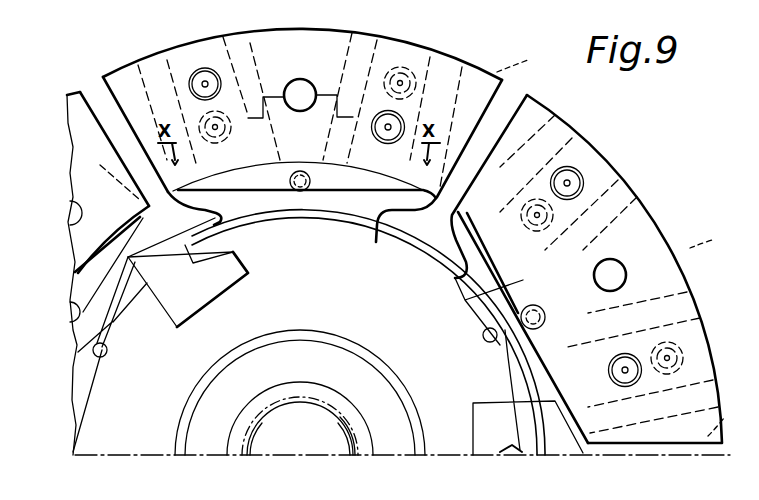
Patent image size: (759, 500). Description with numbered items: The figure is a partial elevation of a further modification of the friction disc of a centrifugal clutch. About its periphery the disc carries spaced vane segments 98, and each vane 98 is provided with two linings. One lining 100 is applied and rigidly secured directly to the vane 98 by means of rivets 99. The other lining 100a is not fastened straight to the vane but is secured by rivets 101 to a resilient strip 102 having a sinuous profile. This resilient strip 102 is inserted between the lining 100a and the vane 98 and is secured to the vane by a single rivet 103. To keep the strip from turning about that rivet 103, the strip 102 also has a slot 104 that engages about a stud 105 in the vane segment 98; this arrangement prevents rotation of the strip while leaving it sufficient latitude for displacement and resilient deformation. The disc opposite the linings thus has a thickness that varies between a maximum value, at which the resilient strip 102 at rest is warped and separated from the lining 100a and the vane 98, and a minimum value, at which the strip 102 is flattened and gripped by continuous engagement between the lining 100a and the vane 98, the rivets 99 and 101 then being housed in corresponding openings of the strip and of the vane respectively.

The vane segment 98 is at (145, 220).
The rivets 99 is at (192, 82).
The lining 100 is at (472, 66).
The lining 100a is at (505, 68).
The rivets 101 is at (410, 65).
The resilient strip 102 is at (347, 216).
The rivet 103 is at (300, 78).
The slot 104 is at (302, 192).
The stud 105 is at (298, 187).